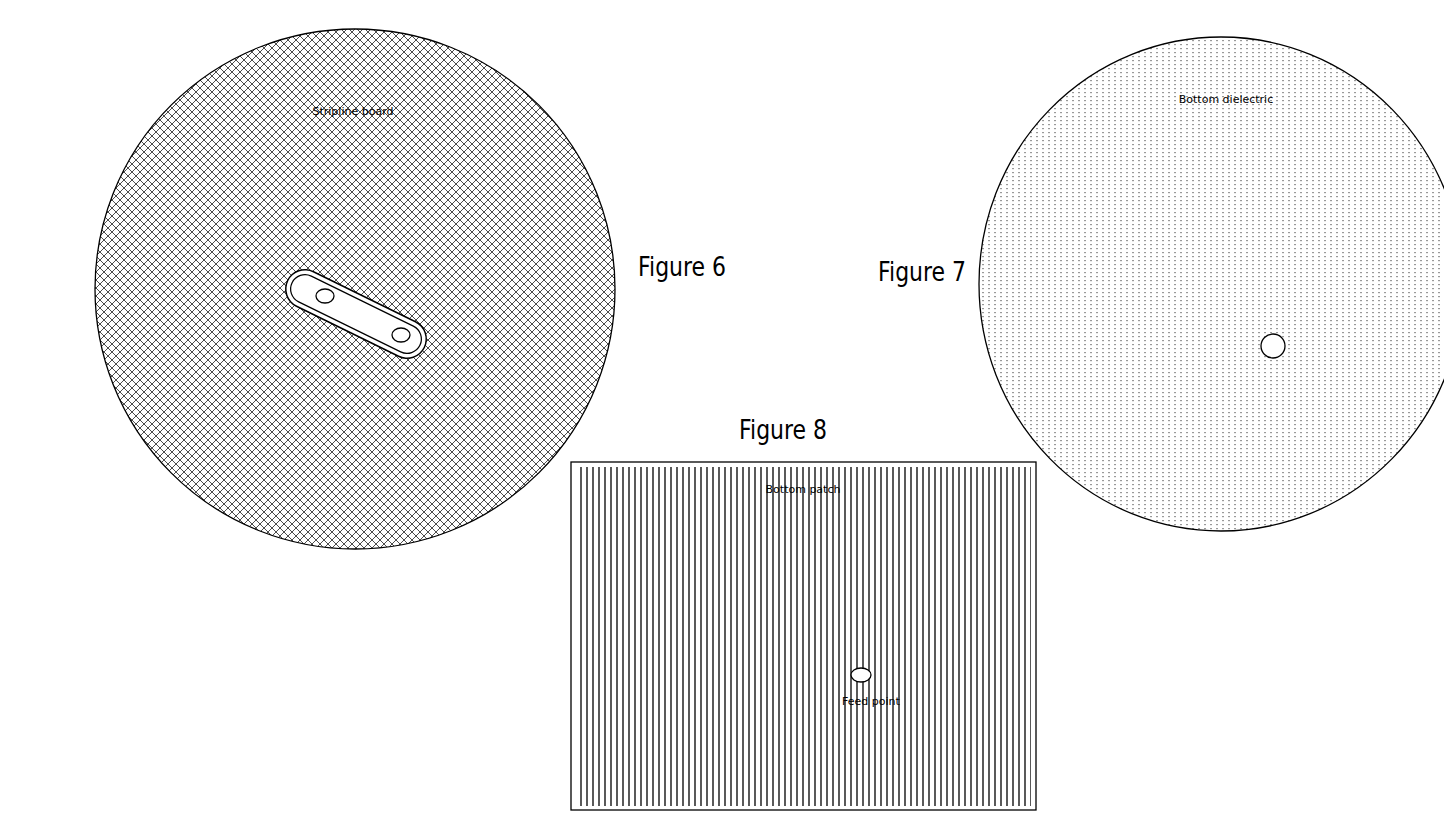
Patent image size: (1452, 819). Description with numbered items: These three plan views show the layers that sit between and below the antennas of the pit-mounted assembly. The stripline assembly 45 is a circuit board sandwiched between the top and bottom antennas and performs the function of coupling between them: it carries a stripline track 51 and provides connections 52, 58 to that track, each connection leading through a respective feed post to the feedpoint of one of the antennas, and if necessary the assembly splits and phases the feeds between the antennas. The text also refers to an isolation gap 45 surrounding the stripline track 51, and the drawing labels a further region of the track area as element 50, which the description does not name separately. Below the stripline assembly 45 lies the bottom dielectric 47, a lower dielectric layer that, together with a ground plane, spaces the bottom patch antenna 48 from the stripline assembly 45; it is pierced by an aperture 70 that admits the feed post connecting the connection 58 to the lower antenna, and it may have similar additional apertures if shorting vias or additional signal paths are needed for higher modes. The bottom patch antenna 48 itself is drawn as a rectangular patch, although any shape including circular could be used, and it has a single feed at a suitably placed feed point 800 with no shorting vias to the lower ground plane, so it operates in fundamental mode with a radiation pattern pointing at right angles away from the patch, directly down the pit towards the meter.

In FIG. 6, the stripline assembly 45 is at (355, 289).
In FIG. 6, the slot 50 is at (297, 261).
In FIG. 6, the stripline track 51 is at (352, 303).
In FIG. 6, the connection 52 is at (316, 320).
In FIG. 6, the connection 58 is at (409, 313).
In FIG. 7, the bottom dielectric 47 is at (1211, 284).
In FIG. 7, the aperture 70 is at (1267, 369).
In FIG. 8, the bottom patch antenna 48 is at (820, 636).
In FIG. 8, the feed point 800 is at (845, 665).